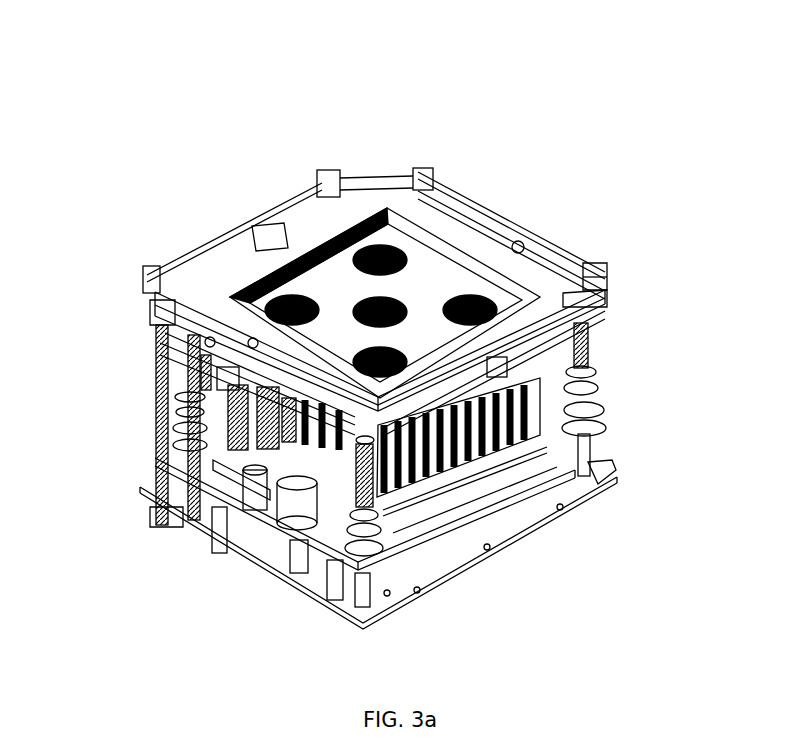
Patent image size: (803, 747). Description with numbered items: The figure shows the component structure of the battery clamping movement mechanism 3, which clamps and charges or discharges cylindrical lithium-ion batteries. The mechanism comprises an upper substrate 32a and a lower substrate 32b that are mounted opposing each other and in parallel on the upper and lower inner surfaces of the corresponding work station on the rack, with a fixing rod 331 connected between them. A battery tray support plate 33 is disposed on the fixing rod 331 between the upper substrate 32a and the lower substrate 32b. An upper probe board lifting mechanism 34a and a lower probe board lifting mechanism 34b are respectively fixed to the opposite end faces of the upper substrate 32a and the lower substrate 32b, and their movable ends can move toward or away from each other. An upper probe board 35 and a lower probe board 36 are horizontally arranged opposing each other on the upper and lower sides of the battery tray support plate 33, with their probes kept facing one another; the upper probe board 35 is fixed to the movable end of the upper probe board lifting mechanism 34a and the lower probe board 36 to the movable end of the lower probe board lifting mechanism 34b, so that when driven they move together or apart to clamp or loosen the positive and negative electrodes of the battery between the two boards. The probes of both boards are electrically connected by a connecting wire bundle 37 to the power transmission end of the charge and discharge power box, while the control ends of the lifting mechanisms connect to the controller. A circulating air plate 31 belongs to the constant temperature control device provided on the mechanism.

The battery clamping movement mechanism 3 is at (412, 227).
The circulating air plate 31 is at (242, 207).
The upper substrate 32a is at (380, 218).
The lower substrate 32b is at (317, 504).
The battery tray support plate 33 is at (312, 441).
The fixing rod 331 is at (120, 263).
The upper probe board lifting mechanism 34a is at (183, 526).
The lower probe board lifting mechanism 34b is at (227, 574).
The upper probe board 35 is at (619, 238).
The lower probe board 36 is at (671, 509).
The connecting wire bundle 37 is at (246, 180).